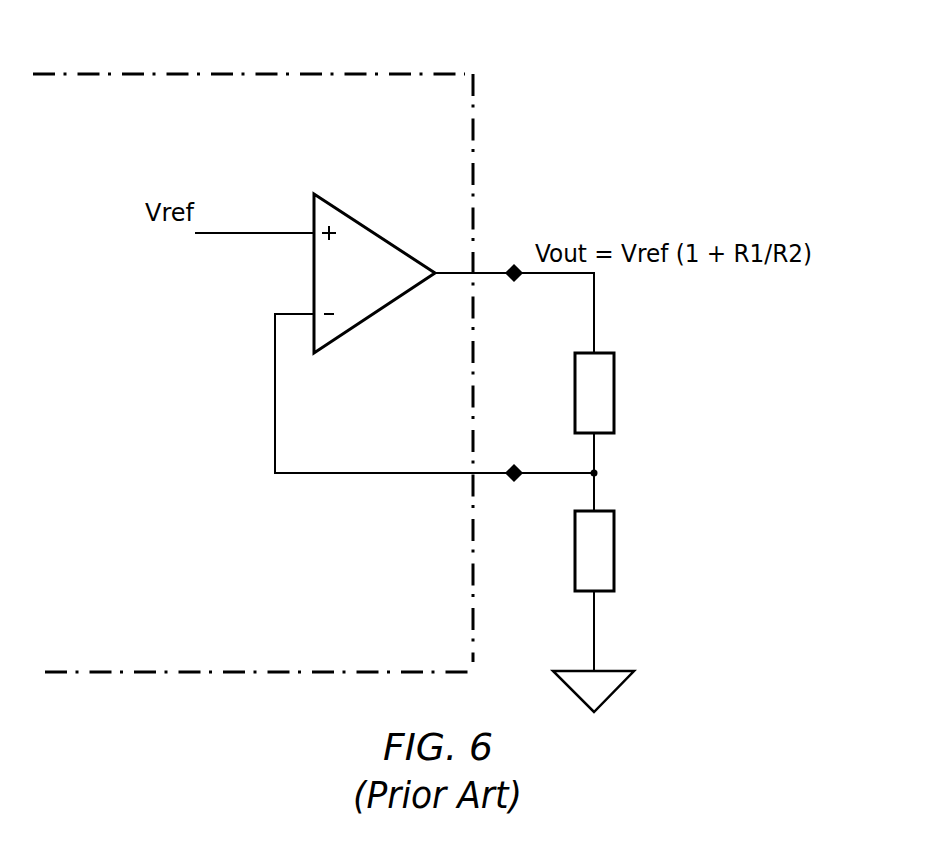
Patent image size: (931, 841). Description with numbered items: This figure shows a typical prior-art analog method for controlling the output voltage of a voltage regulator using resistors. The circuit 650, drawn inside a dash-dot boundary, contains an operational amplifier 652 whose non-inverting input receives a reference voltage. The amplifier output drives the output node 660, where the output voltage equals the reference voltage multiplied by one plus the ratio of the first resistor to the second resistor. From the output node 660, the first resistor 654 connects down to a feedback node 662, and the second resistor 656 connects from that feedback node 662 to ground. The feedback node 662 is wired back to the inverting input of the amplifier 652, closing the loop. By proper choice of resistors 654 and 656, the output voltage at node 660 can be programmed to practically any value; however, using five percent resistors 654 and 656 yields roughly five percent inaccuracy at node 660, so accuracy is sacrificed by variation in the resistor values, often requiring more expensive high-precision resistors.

The prior art voltage regulator circuit boundary 650 is at (308, 72).
The operational amplifier 652 is at (355, 215).
The resistor R1 654 is at (603, 352).
The resistor R2 656 is at (603, 510).
The output node 660 is at (512, 282).
The feedback node 662 is at (512, 465).